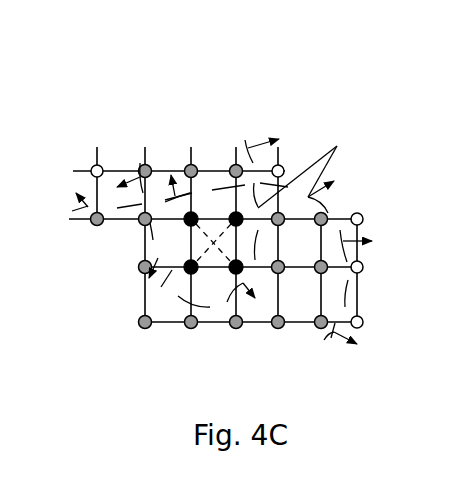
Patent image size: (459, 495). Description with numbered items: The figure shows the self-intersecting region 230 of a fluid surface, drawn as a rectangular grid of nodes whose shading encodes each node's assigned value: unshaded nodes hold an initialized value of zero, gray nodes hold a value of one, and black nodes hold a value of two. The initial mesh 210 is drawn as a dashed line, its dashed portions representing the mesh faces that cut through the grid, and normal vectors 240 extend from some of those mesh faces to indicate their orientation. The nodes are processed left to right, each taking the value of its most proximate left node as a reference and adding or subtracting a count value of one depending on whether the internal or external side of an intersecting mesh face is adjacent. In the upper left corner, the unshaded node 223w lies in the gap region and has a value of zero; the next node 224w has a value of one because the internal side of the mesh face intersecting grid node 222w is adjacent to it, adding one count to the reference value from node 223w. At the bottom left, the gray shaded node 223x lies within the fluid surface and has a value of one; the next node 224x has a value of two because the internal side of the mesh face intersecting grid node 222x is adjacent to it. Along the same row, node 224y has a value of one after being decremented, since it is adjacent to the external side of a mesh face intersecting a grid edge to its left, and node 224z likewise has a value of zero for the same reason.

The initial mesh 210 is at (315, 171).
The grid node intersected by a mesh face 222w is at (119, 167).
The grid node intersected by a mesh face 222x is at (173, 270).
The unshaded node 223w is at (93, 165).
The gray shaded node 223x is at (138, 270).
The subject node 224w is at (140, 165).
The subject node 224x is at (186, 272).
The node 224y is at (287, 273).
The node 224z is at (365, 275).
The self-intersecting region 230 is at (350, 84).
The normal vectors 240 is at (262, 138).